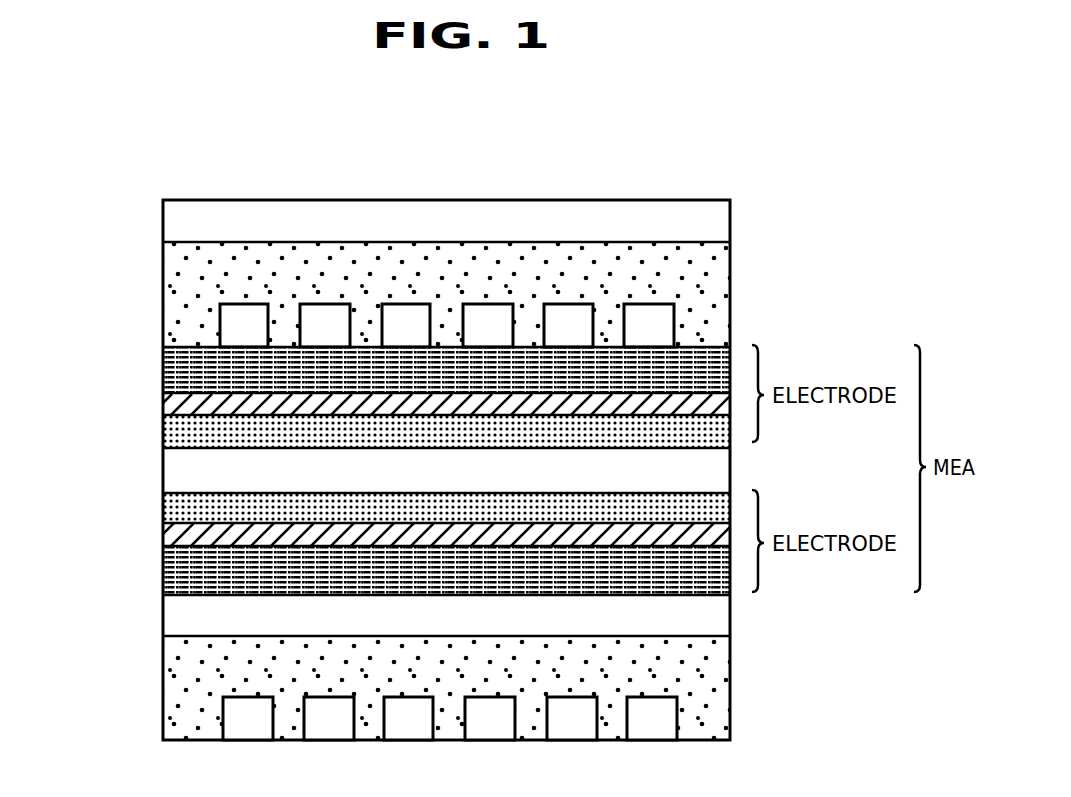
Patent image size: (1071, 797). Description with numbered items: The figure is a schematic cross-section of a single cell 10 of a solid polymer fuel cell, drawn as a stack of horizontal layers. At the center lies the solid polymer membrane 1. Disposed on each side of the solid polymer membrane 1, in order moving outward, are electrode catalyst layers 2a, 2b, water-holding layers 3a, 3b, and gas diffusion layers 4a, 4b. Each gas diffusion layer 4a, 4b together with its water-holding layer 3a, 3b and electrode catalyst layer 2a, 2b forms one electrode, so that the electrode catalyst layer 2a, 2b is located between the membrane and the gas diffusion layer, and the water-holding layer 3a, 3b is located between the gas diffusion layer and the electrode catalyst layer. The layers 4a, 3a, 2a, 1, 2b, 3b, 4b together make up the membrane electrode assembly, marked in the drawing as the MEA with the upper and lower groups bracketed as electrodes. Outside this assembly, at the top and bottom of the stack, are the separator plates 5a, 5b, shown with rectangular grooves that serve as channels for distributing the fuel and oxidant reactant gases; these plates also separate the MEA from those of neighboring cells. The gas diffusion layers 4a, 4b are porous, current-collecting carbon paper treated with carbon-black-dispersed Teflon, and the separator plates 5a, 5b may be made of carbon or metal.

The single cell 10 is at (306, 181).
The separator plate 5a is at (174, 280).
The gas diffusion layer 4a is at (172, 367).
The water-holding layer 3a is at (172, 403).
The electrode catalyst layer 2a is at (172, 432).
The solid polymer membrane 1 is at (174, 472).
The electrode catalyst layer 2b is at (172, 503).
The water-holding layer 3b is at (172, 538).
The gas diffusion layer 4b is at (172, 573).
The separator plate 5b is at (176, 672).